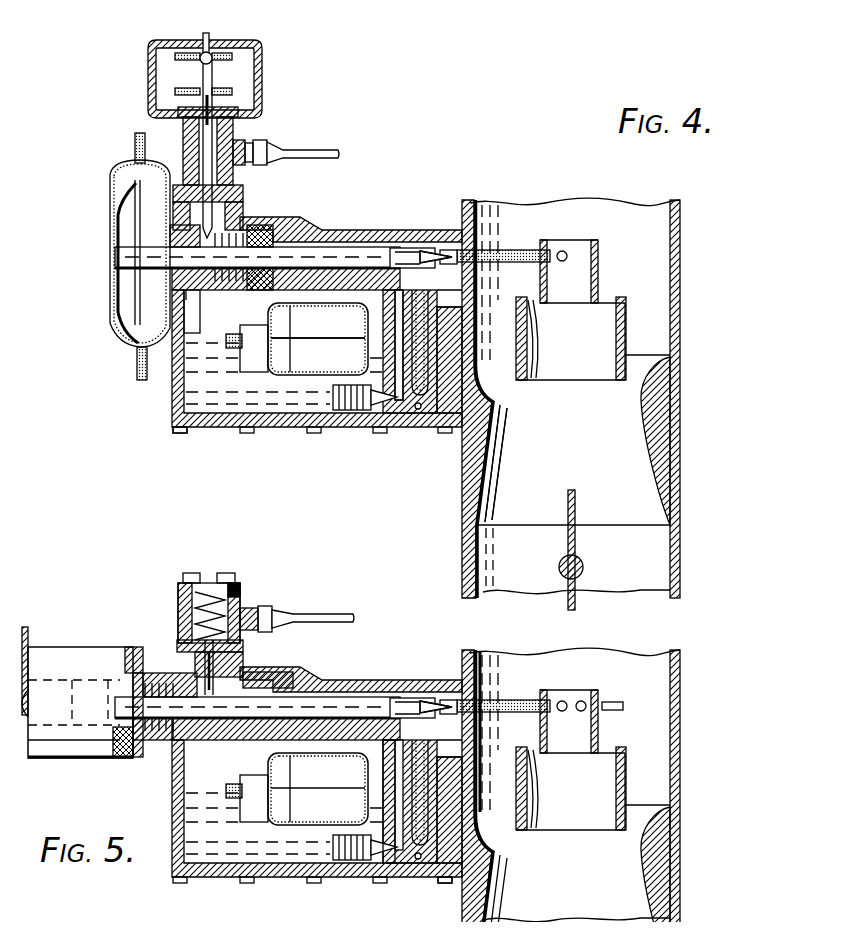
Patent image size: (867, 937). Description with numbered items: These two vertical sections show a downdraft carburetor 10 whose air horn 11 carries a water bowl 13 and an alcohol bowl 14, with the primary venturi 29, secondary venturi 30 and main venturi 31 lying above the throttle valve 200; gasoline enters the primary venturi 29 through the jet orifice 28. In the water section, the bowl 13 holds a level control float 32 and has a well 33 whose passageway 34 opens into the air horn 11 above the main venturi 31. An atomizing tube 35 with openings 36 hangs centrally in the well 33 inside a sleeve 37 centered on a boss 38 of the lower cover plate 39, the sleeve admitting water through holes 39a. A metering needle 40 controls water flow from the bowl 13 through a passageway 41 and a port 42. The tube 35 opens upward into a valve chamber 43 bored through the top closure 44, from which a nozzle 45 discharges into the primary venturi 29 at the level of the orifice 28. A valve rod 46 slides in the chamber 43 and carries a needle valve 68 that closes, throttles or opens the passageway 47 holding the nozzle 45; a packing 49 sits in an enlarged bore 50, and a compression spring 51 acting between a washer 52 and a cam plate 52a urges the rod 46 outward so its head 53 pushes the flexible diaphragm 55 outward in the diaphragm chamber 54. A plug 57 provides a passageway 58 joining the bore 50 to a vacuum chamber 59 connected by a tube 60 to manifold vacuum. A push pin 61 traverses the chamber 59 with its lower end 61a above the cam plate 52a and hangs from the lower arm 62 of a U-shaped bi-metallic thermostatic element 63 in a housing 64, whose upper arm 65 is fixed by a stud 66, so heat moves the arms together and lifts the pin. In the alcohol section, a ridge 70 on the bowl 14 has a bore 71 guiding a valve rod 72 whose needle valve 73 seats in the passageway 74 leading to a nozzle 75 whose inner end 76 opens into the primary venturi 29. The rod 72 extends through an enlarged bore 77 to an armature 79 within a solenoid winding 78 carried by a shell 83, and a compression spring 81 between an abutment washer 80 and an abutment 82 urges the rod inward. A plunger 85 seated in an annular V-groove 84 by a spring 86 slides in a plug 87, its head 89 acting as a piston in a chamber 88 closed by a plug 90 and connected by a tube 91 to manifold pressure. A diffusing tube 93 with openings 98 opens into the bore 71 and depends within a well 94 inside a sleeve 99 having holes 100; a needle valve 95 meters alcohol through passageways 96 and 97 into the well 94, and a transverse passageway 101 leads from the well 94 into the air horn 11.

In FIG. 4, the downdraft carburetor 10 is at (683, 538).
In FIG. 5, the downdraft carburetor 10 is at (683, 917).
In FIG. 4, the air horn 11 is at (682, 213).
In FIG. 5, the air horn 11 is at (682, 667).
In FIG. 4, the water bowl 13 is at (178, 398).
In FIG. 5, the alcohol bowl 14 is at (180, 820).
In FIG. 4, the jet orifice 28 is at (565, 251).
In FIG. 5, the jet orifice 28 is at (586, 702).
In FIG. 4, the primary venturi 29 is at (600, 268).
In FIG. 5, the primary venturi 29 is at (605, 732).
In FIG. 4, the secondary venturi 30 is at (626, 330).
In FIG. 5, the secondary venturi 30 is at (626, 780).
In FIG. 4, the main venturi 31 is at (650, 395).
In FIG. 5, the main venturi 31 is at (655, 845).
In FIG. 4, the level control float 32 is at (310, 320).
In FIG. 4, the well 33 is at (430, 343).
In FIG. 4, the passageway 34 is at (478, 300).
In FIG. 4, the atomizing tube 35 is at (400, 427).
In FIG. 4, the openings 36 is at (478, 340).
In FIG. 4, the sleeve 37 is at (440, 385).
In FIG. 4, the boss 38 is at (430, 428).
In FIG. 4, the lower cover plate 39 is at (210, 428).
In FIG. 4, the holes 39a is at (448, 400).
In FIG. 4, the metering needle 40 is at (340, 410).
In FIG. 4, the passageway 41 is at (345, 372).
In FIG. 4, the port 42 is at (383, 430).
In FIG. 4, the valve chamber 43 is at (400, 250).
In FIG. 4, the top closure 44 is at (358, 230).
In FIG. 4, the nozzle 45 is at (522, 250).
In FIG. 5, the nozzle 45 is at (580, 700).
In FIG. 4, the valve rod 46 is at (320, 250).
In FIG. 4, the passageway 47 is at (478, 246).
In FIG. 4, the packing 49 is at (270, 228).
In FIG. 4, the enlarged portion of the bore 50 is at (180, 292).
In FIG. 4, the compression spring 51 is at (200, 290).
In FIG. 4, the washer 52 is at (248, 232).
In FIG. 4, the cam plate 52a is at (240, 335).
In FIG. 4, the outer end head 53 is at (108, 220).
In FIG. 4, the diaphragm chamber 54 is at (120, 333).
In FIG. 4, the flexible diaphragm 55 is at (112, 200).
In FIG. 4, the plug 57 is at (186, 165).
In FIG. 4, the passageway 58 is at (180, 215).
In FIG. 4, the vacuum chamber 59 is at (240, 140).
In FIG. 4, the pipe or tube 60 is at (312, 153).
In FIG. 4, the push pin 61 is at (214, 100).
In FIG. 4, the lower end of the push pin 61a is at (200, 240).
In FIG. 4, the lower arm 62 is at (198, 90).
In FIG. 4, the bi-metallic thermostatic element 63 is at (190, 53).
In FIG. 4, the housing 64 is at (262, 60).
In FIG. 4, the upper arm 65 is at (236, 55).
In FIG. 4, the stud 66 is at (207, 33).
In FIG. 4, the needle valve 68 is at (425, 250).
In FIG. 5, the ridge 70 is at (365, 698).
In FIG. 5, the bore 71 is at (405, 698).
In FIG. 5, the valve rod 72 is at (333, 698).
In FIG. 5, the needle valve 73 is at (425, 698).
In FIG. 5, the passageway 74 is at (482, 696).
In FIG. 5, the nozzle 75 is at (518, 698).
In FIG. 5, the inner end 76 is at (561, 700).
In FIG. 5, the enlarged bore 77 is at (300, 672).
In FIG. 5, the solenoid winding 78 is at (70, 760).
In FIG. 5, the armature 79 is at (80, 690).
In FIG. 5, the abutment washer 80 is at (213, 712).
In FIG. 5, the compression spring 81 is at (150, 745).
In FIG. 5, the abutment 82 is at (150, 672).
In FIG. 5, the shell 83 is at (120, 760).
In FIG. 5, the annular V-groove 84 is at (210, 700).
In FIG. 5, the plunger 85 is at (243, 673).
In FIG. 5, the spring 86 is at (238, 588).
In FIG. 5, the plug 87 is at (180, 640).
In FIG. 5, the chamber 88 is at (183, 590).
In FIG. 5, the head 89 is at (255, 612).
In FIG. 5, the plug 90 is at (210, 573).
In FIG. 5, the tube 91 is at (320, 615).
In FIG. 5, the diffusing tube 93 is at (440, 812).
In FIG. 5, the well 94 is at (445, 878).
In FIG. 5, the needle valve 95 is at (370, 878).
In FIG. 5, the passageway 96 is at (350, 785).
In FIG. 5, the passageway 97 is at (393, 878).
In FIG. 5, the openings 98 is at (430, 790).
In FIG. 5, the sleeve 99 is at (455, 842).
In FIG. 5, the holes 100 is at (420, 878).
In FIG. 5, the transverse passageway 101 is at (478, 748).
In FIG. 4, the throttle valve 200 is at (576, 534).